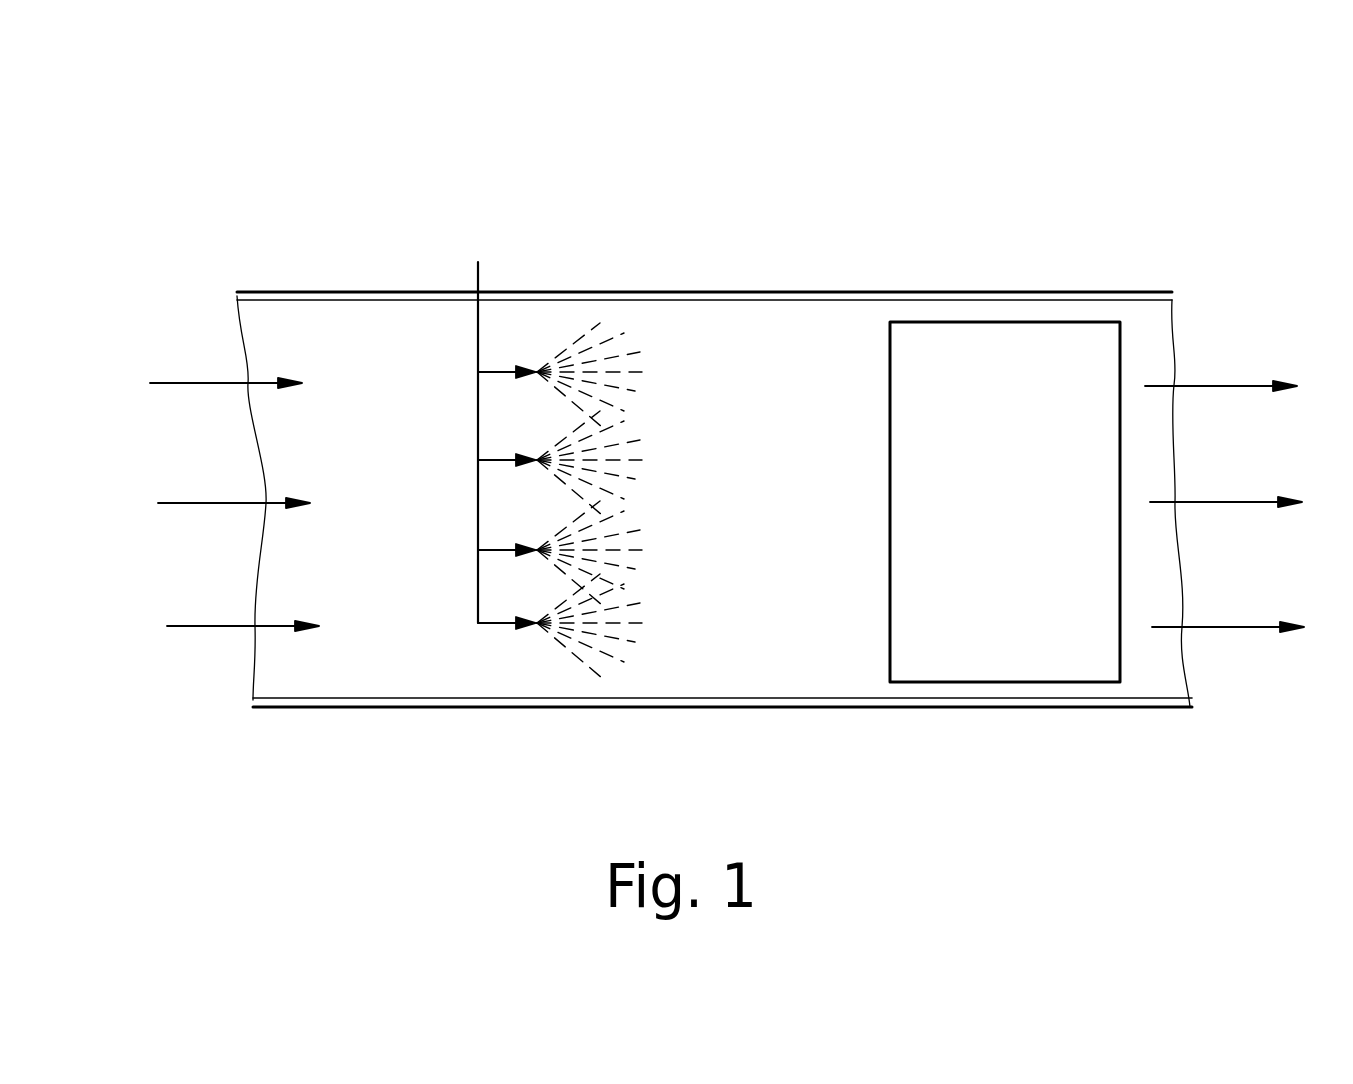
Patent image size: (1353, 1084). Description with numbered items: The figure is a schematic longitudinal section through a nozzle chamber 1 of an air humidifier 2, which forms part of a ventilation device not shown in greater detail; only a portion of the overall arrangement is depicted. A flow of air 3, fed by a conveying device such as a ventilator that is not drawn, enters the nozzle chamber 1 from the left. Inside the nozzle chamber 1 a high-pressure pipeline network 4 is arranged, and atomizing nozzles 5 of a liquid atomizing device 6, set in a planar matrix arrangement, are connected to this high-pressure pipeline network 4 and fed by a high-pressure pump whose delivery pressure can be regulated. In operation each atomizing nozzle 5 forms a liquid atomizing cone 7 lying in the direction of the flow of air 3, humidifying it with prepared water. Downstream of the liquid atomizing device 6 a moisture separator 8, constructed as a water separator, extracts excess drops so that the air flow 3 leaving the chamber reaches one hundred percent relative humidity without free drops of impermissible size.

The nozzle chamber 1 is at (721, 348).
The air humidifier 2 is at (424, 256).
The flow of air 3 is at (178, 383).
The high-pressure pipeline network 4 is at (481, 334).
The atomizing nozzles 5 is at (503, 372).
The liquid atomizing device 6 is at (503, 660).
The liquid atomizing cone 7 is at (616, 389).
The moisture separator 8 is at (988, 355).